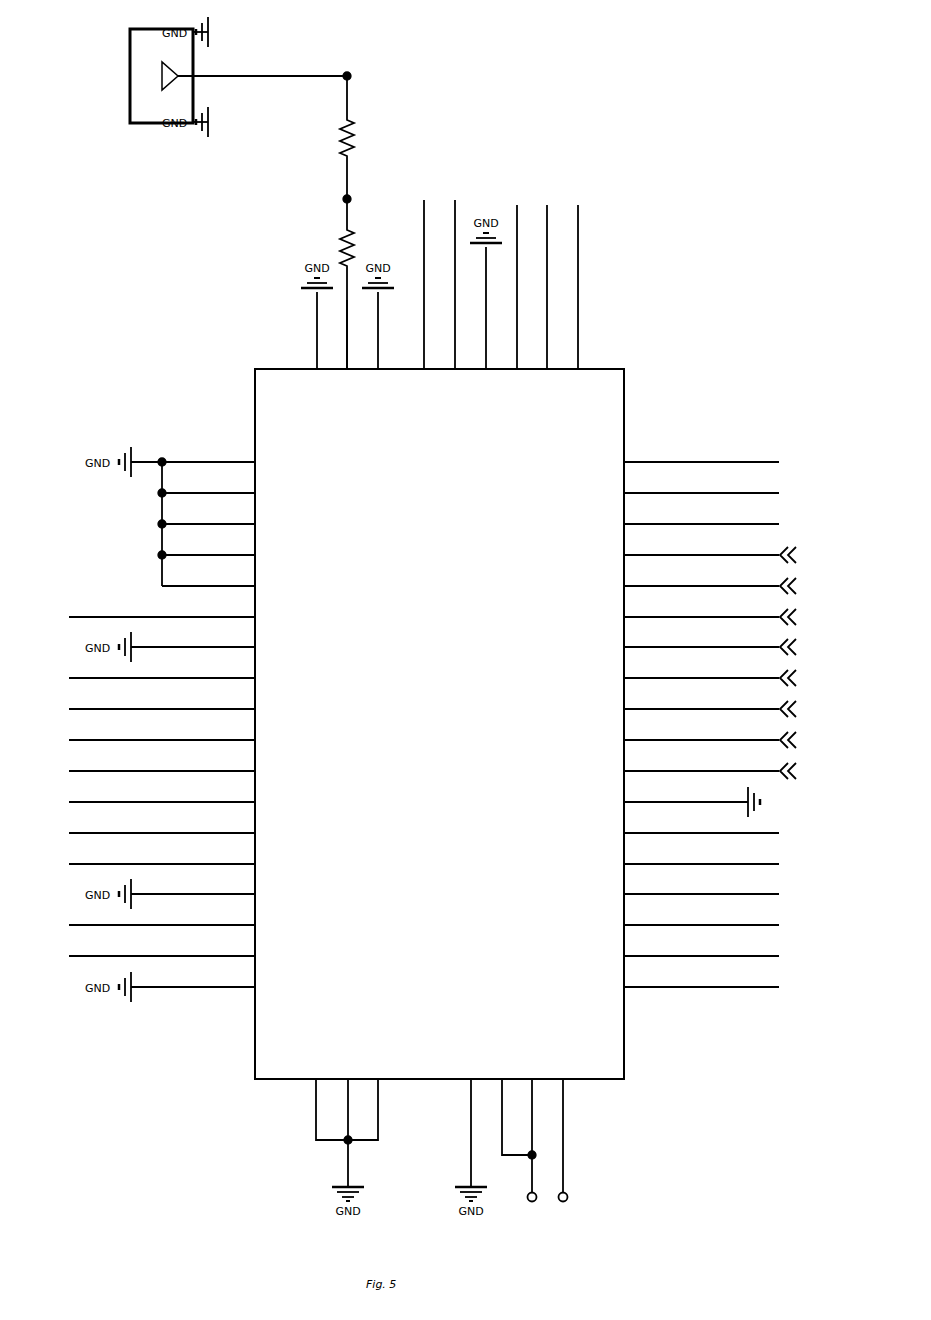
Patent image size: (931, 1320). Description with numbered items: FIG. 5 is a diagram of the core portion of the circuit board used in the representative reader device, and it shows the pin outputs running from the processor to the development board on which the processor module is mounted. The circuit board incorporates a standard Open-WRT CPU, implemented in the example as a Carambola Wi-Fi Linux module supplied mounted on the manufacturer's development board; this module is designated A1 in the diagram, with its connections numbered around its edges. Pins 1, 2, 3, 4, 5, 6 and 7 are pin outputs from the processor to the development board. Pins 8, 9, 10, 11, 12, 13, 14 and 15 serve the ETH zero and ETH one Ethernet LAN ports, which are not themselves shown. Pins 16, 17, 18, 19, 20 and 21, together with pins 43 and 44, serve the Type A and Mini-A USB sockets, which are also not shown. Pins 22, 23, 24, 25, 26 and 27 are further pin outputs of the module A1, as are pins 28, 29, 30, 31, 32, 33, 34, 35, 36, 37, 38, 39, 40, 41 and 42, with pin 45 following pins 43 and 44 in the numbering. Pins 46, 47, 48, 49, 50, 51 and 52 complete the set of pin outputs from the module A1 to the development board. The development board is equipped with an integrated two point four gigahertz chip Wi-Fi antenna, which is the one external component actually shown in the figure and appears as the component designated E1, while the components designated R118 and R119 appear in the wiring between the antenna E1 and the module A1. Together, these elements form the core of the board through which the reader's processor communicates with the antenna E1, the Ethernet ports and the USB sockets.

The pin 1 GPIO_23 1 is at (675, 982).
The pin 2 GPIO_22 2 is at (675, 951).
The pin 3 GPIO_21 3 is at (675, 920).
The pin 4 GPIO_20 4 is at (675, 889).
The pin 5 GPIO_19 5 is at (675, 859).
The pin 6 GPIO_18 6 is at (675, 828).
The pin 7 GND 7 is at (691, 802).
The Ethernet LAN port pin 8 is at (691, 766).
The Ethernet LAN port pin 9 is at (689, 735).
The Ethernet LAN port pin 10 is at (688, 704).
The Ethernet LAN port pin 11 is at (687, 673).
The Ethernet LAN port pin 12 is at (691, 642).
The Ethernet LAN port pin 13 is at (689, 612).
The Ethernet LAN port pin 14 is at (688, 581).
The Ethernet LAN port pin 15 is at (687, 550).
The USB socket pin 16 is at (673, 519).
The USB socket pin 17 is at (677, 488).
The USB socket pin 18 is at (673, 457).
The USB socket pin 19 is at (575, 311).
The USB socket pin 20 is at (544, 307).
The USB socket pin 21 is at (514, 306).
The pin 22 GND 22 is at (486, 311).
The pin 23 GPIO11 23 is at (452, 311).
The pin 24 GPIO12 24 is at (421, 311).
The pin 25 GND 25 is at (378, 334).
The pin 26 ANT0 26 is at (344, 355).
The pin 27 GND 27 is at (317, 334).
The pin 28 GND 28 is at (187, 516).
The pin 29 GND 29 is at (223, 490).
The pin 30 GND 30 is at (223, 521).
The pin 31 GND 31 is at (223, 552).
The pin 32 GND 32 is at (225, 583).
The pin 33 RESET 33 is at (184, 613).
The pin 34 GND 34 is at (187, 647).
The pin 35 LED6 35 is at (181, 674).
The pin 36 LED5 36 is at (181, 705).
The pin 37 LED4 37 is at (181, 736).
The pin 38 LED3 38 is at (181, 767).
The pin 39 LED2 39 is at (181, 798).
The pin 40 LED1 40 is at (181, 829).
The pin 41 LED0 41 is at (181, 860).
The pin 42 GND 42 is at (187, 894).
The USB socket pin 43 is at (193, 921).
The USB socket pin 44 is at (191, 952).
The pin 45 GND 45 is at (187, 987).
The pin 46 GND 46 is at (325, 1093).
The pin 47 GND 47 is at (348, 1132).
The pin 48 GND 48 is at (367, 1093).
The pin 49 GND 49 is at (471, 1132).
The pin 50 +3VD 50 is at (510, 1097).
The pin 51 +3VD 51 is at (530, 1128).
The pin 52 +2VD 52 is at (572, 1128).
The Carambola module A1 is at (439, 716).
The ceramic antenna ACA5036 E1 is at (238, 78).
The resistor R118 is at (371, 137).
The resistor R119 is at (371, 284).